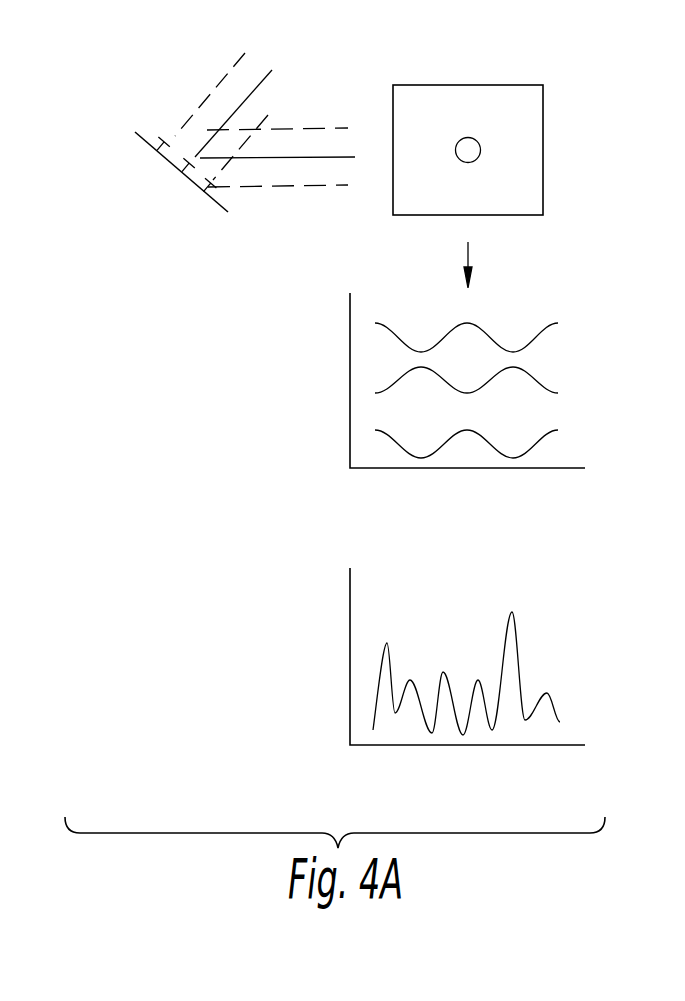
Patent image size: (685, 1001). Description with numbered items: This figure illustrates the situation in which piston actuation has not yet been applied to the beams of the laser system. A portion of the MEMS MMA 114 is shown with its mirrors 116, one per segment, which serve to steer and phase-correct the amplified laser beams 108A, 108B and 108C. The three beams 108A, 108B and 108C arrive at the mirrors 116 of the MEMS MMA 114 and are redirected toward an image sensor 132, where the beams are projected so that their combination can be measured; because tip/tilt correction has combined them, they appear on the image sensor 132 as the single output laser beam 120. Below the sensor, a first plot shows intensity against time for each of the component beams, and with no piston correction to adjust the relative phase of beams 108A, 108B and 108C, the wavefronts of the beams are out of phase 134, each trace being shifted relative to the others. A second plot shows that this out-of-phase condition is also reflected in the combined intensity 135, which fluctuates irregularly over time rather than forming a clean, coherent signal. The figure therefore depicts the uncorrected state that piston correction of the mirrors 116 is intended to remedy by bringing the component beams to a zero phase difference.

The amplified laser beam 108A is at (225, 83).
The amplified laser beam 108B is at (232, 112).
The amplified laser beam 108C is at (274, 113).
The MEMS MMA 114 is at (147, 140).
The mirrors 116 is at (165, 157).
The single output laser beam 120 is at (468, 137).
The image sensor 132 is at (543, 88).
The out-of-phase wavefronts 134 is at (550, 288).
The combined intensity 135 is at (550, 565).